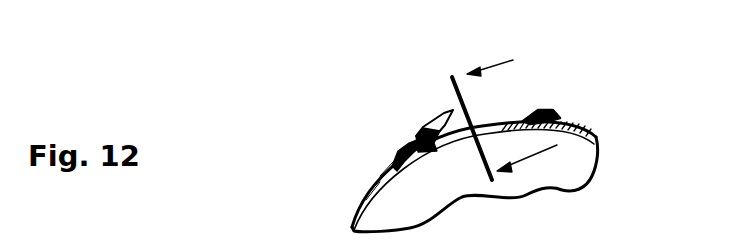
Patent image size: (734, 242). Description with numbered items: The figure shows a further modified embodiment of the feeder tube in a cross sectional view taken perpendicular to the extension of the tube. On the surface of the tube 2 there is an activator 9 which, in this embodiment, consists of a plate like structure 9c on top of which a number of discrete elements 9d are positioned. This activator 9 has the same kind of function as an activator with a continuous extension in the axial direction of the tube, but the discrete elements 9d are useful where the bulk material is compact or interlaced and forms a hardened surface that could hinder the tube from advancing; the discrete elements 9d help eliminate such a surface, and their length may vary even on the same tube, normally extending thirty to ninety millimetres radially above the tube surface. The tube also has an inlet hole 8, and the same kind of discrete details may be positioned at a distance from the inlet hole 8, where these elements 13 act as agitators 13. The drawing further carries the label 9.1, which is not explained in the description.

The tube 2 is at (595, 129).
The inlet hole 8 is at (484, 142).
The activator 9 is at (416, 124).
The plate like structure 9c is at (402, 147).
The discrete elements 9d is at (444, 118).
The agitators 13 is at (558, 112).
The holding element 9.1 is at (599, 237).